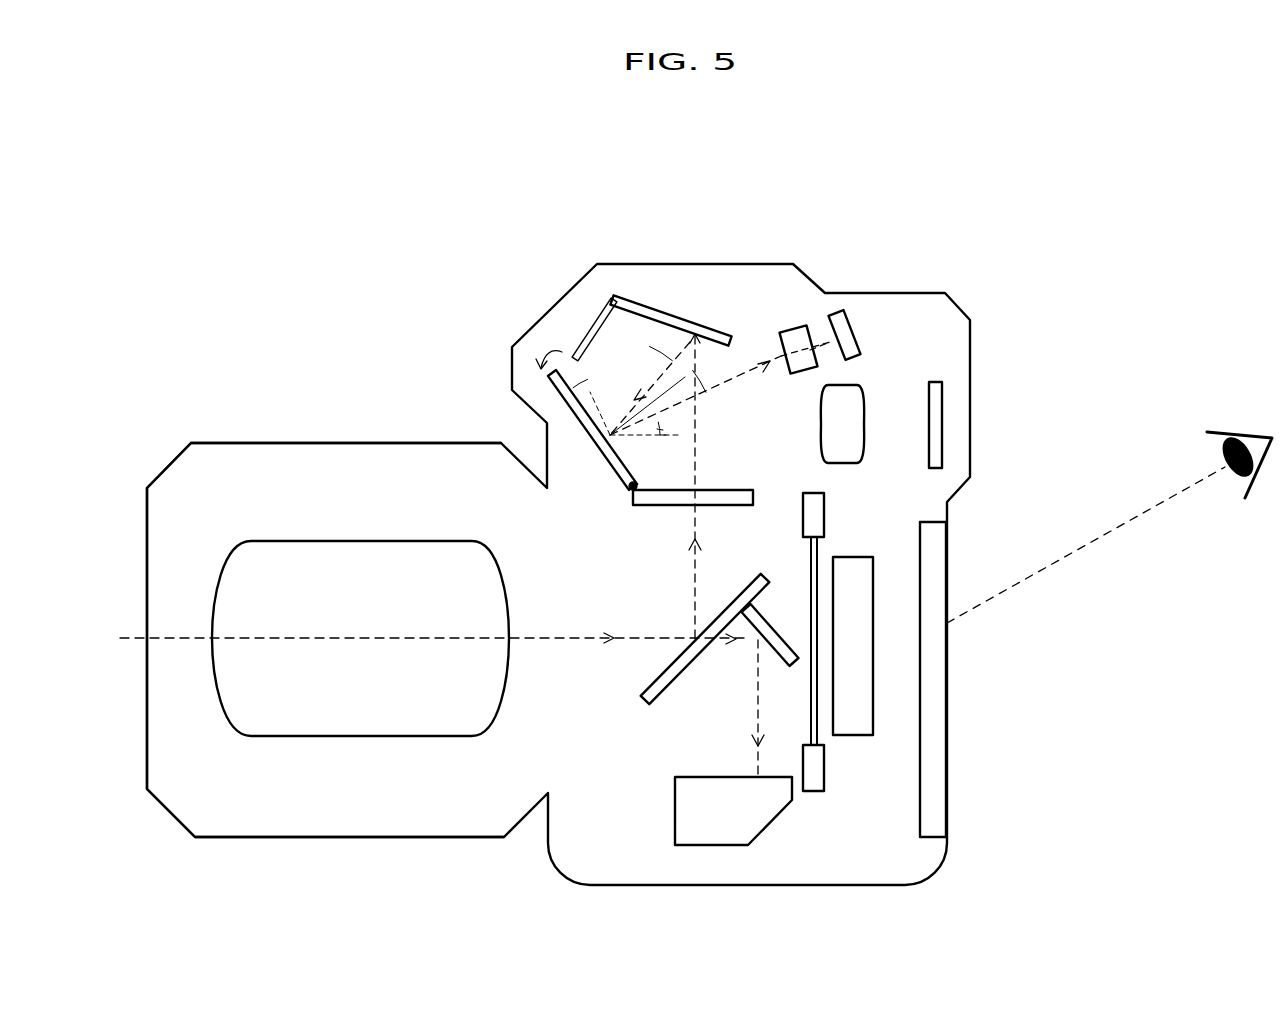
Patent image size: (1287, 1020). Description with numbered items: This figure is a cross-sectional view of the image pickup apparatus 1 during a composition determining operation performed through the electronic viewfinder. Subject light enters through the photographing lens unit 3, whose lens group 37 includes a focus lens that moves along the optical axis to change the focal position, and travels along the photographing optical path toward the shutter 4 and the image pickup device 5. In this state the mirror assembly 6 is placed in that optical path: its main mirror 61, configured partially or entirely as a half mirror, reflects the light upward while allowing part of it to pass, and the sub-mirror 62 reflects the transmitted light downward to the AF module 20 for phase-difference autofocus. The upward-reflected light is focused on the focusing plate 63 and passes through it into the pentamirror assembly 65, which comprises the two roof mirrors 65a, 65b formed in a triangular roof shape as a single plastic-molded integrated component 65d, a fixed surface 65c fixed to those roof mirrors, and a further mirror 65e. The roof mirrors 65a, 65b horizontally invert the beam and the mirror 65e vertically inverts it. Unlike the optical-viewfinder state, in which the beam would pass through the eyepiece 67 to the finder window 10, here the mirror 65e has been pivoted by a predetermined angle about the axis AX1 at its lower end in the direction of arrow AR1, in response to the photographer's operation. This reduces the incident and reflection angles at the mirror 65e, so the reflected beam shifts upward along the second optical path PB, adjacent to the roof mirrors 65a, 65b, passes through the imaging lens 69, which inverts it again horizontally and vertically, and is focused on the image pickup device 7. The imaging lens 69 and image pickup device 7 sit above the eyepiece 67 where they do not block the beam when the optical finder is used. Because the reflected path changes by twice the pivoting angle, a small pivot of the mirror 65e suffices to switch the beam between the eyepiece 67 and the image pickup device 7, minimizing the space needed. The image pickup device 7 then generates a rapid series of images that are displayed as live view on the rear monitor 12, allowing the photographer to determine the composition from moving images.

The image pickup apparatus 1 is at (362, 163).
The photographing lens unit 3 is at (345, 838).
The lens group 37 is at (362, 541).
The shutter 4 is at (812, 792).
The image pickup device 5 is at (855, 557).
The mirror assembly 6 is at (636, 718).
The main mirror 61 is at (645, 693).
The sub-mirror 62 is at (770, 630).
The AF module 20 is at (710, 850).
The rear monitor 12 is at (947, 676).
The finder window 10 is at (945, 395).
The focusing plate 63 is at (650, 507).
The pentamirror assembly 65 is at (636, 291).
The roof mirror 65a is at (684, 340).
The roof mirror 65b is at (670, 320).
The fixed surface 65c is at (587, 328).
The integrated component 65d is at (656, 308).
The mirror 65e is at (582, 418).
The eyepiece 67 is at (866, 393).
The imaging lens 69 is at (781, 327).
The image pickup device 7 is at (858, 335).
The second optical path PB is at (814, 340).
The arrow AR1 is at (550, 350).
The axis AX1 is at (632, 490).